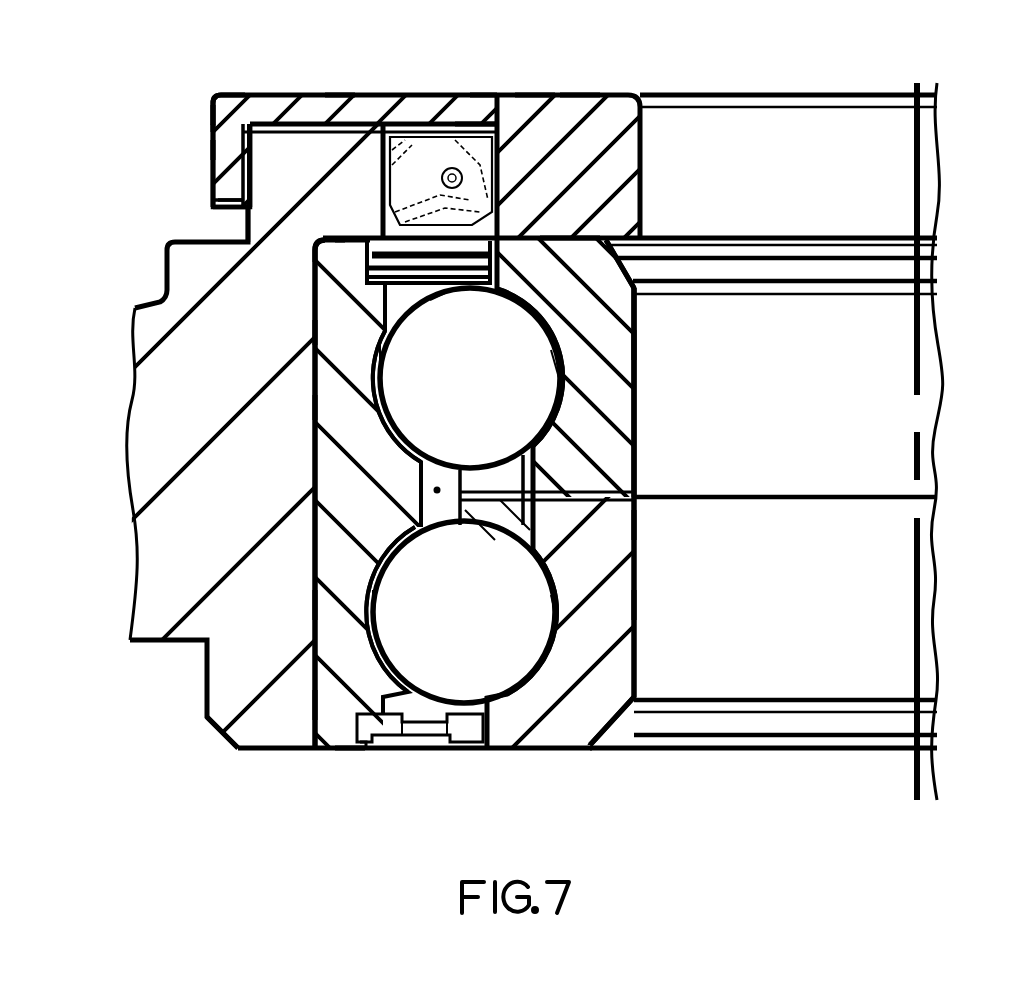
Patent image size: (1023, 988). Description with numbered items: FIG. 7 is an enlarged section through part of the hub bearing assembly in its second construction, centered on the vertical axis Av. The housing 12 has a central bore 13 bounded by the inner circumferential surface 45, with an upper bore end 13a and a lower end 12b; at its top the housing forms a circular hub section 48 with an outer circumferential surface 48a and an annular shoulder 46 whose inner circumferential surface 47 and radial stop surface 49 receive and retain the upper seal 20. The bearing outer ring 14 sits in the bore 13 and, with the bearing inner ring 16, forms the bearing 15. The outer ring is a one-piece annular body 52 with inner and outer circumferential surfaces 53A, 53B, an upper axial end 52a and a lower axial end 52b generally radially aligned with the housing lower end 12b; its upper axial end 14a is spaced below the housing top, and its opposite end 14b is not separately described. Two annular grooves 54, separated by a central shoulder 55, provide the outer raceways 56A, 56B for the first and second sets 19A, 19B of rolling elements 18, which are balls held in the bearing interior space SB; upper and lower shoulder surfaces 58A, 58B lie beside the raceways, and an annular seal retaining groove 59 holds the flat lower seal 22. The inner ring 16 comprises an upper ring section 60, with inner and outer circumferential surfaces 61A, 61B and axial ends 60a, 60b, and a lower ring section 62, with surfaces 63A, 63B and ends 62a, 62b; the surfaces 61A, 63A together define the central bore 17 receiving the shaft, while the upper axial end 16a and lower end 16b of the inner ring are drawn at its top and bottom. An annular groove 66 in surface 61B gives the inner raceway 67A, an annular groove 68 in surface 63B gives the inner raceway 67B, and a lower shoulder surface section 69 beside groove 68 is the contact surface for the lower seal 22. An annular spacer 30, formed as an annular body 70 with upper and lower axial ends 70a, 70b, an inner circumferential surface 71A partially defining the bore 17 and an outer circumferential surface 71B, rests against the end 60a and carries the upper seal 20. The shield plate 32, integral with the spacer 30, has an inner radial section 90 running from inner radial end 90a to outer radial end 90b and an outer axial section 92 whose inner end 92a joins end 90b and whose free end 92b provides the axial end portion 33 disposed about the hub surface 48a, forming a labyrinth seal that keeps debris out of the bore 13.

The housing 12 is at (137, 684).
The lower end of housing 12b is at (275, 757).
The central bore 13 is at (324, 338).
The upper end of housing bore 13a is at (473, 97).
The bearing outer ring 14 is at (260, 505).
The upper axial end of bearing outer ring 14a is at (305, 253).
The hub lower end 14b is at (366, 755).
The bearing 15 is at (250, 445).
The bearing inner ring 16 is at (686, 616).
The upper axial end of bearing inner ring 16a is at (700, 295).
The outer ring lower end face 16b is at (581, 755).
The central bore of inner ring 17 is at (642, 360).
The rolling elements 18 is at (588, 343).
The first set of rolling elements 19A is at (600, 418).
The second set of rolling elements 19B is at (600, 645).
The upper seal 20 is at (463, 135).
The lower seal 22 is at (432, 754).
The annular spacer 30 is at (573, 80).
The annular shield plate 32 is at (341, 90).
The axial end portion of shield plate 33 is at (205, 148).
The inner circumferential surface 45 is at (310, 610).
The annular shoulder 46 is at (372, 140).
The inner circumferential surface of shoulder 47 is at (383, 168).
The hub section 48 is at (286, 140).
The outer circumferential surface of hub section 48a is at (247, 220).
The radial stop surface 49 is at (336, 242).
The annular body of outer ring 52 is at (307, 462).
The upper axial end of outer ring body 52a is at (322, 262).
The lower axial end of outer ring body 52b is at (352, 752).
The inner circumferential surface of outer ring body 53A is at (434, 308).
The outer circumferential surface of outer ring body 53B is at (308, 406).
The annular grooves 54 is at (387, 380).
The central shoulder 55 is at (417, 493).
The first outer raceway 56A is at (389, 402).
The second outer raceway 56B is at (389, 622).
The upper shoulder surface 58A is at (318, 303).
The lower shoulder surface 58B is at (380, 684).
The seal retaining groove 59 is at (362, 704).
The upper ring section 60 is at (630, 250).
The upper axial end of upper ring section 60a is at (625, 220).
The lower axial end of upper ring section 60b is at (625, 487).
The inner circumferential surface of upper ring section 61A is at (640, 397).
The outer circumferential surface of upper ring section 61B is at (588, 300).
The lower ring section 62 is at (592, 758).
The upper axial end of lower ring section 62a is at (610, 478).
The lower axial end of lower ring section 62b is at (557, 752).
The inner circumferential surface of lower ring section 63A is at (640, 567).
The outer circumferential surface of lower ring section 63B is at (592, 520).
The annular groove of upper ring section 66 is at (547, 334).
The first inner raceway 67A is at (542, 387).
The second inner raceway 67B is at (542, 615).
The annular groove of lower ring section 68 is at (548, 588).
The lower shoulder surface section 69 is at (472, 755).
The annular body of spacer 70 is at (613, 90).
The upper axial end of spacer body 70a is at (533, 94).
The lower axial end of spacer body 70b is at (548, 243).
The inner circumferential surface of spacer 71A is at (640, 149).
The outer circumferential surface of spacer 71B is at (640, 172).
The inner annular radial section 90 is at (437, 90).
The inner radial end 90a is at (492, 93).
The outer radial end 90b is at (248, 94).
The outer annular axial section 92 is at (210, 167).
The inner end of axial section 92a is at (208, 125).
The free end of axial section 92b is at (232, 194).
The bearing interior space SB is at (434, 490).
The vertical axis Av is at (928, 128).